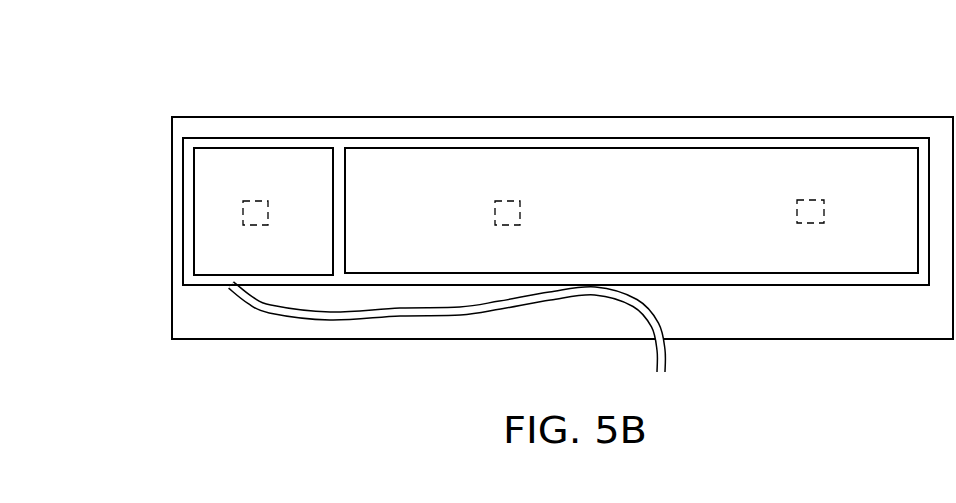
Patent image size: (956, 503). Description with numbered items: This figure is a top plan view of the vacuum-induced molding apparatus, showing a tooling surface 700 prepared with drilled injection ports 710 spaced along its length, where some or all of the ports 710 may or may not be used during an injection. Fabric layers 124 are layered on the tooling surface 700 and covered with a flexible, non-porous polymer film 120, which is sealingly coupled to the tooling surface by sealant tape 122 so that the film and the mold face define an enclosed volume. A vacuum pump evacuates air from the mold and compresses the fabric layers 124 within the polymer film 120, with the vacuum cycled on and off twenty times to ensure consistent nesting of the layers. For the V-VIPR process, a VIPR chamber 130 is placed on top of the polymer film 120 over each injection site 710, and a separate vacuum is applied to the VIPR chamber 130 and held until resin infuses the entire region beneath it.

The tooling surface 700 is at (524, 230).
The injection ports 710 is at (243, 215).
The polymer film 120 is at (852, 253).
The sealant tape 122 is at (810, 278).
The fabric layers 124 is at (437, 168).
The VIPR chamber 130 is at (188, 230).